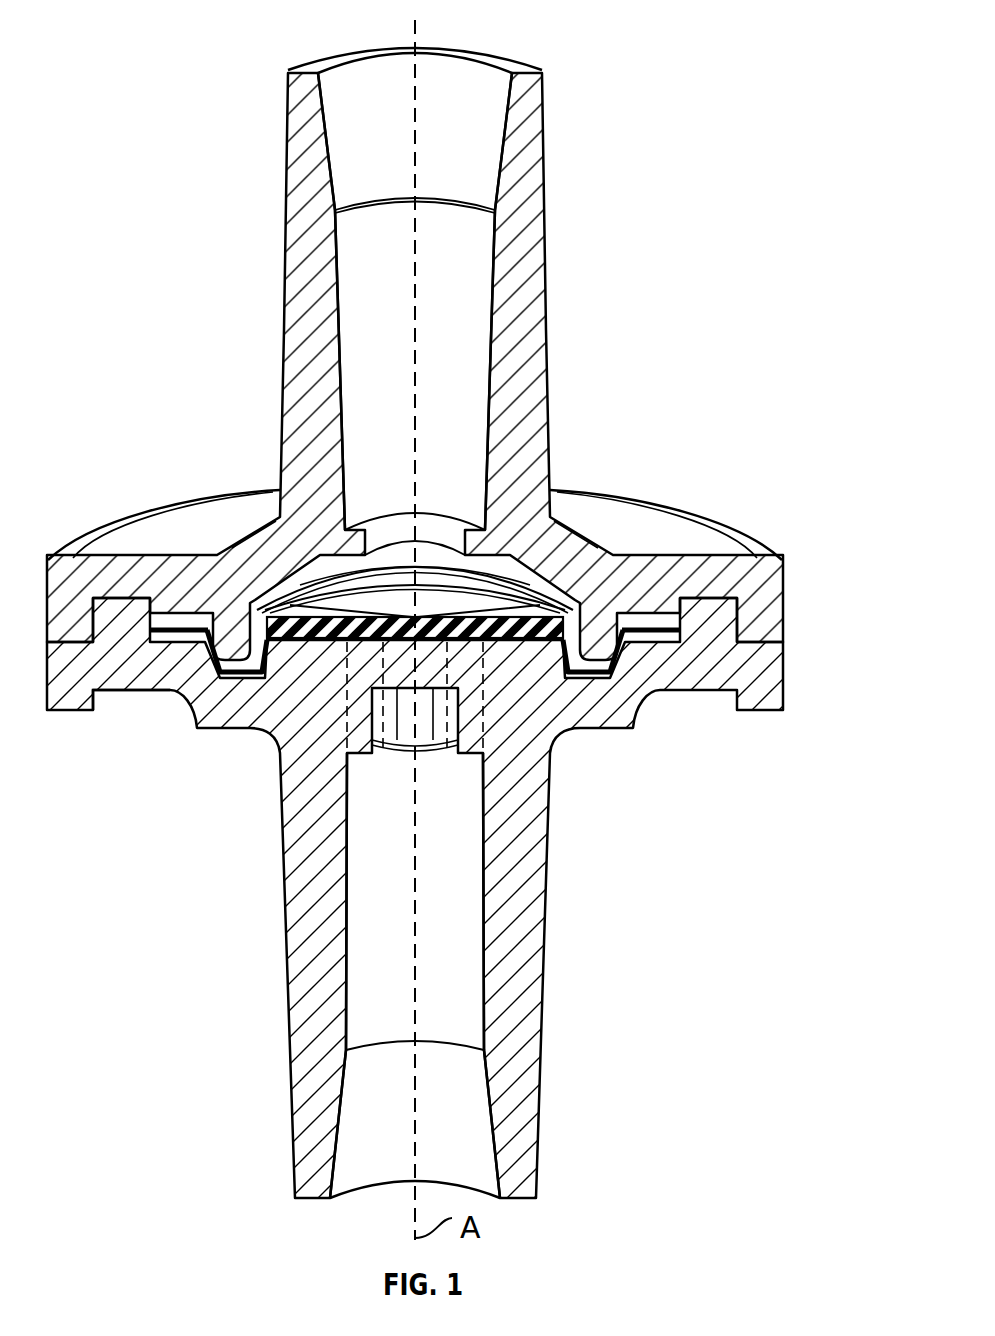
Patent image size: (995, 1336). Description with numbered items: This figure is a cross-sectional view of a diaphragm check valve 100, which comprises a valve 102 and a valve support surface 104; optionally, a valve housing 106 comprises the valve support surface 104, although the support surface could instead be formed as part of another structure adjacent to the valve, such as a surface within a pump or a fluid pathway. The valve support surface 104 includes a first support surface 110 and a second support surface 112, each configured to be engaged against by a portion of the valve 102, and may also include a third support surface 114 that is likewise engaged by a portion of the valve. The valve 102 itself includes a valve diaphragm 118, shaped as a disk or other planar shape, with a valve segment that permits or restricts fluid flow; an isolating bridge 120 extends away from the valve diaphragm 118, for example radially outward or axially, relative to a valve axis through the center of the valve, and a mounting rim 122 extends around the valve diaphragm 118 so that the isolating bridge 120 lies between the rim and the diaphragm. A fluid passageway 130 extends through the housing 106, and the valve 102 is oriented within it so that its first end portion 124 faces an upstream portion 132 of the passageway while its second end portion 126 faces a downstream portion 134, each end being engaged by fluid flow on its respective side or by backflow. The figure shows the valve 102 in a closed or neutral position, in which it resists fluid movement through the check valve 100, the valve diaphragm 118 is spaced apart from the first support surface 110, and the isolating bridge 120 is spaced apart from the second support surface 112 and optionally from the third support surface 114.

The diaphragm check valve 100 is at (125, 55).
The valve 102 is at (487, 600).
The valve support surface 104 is at (277, 691).
The valve housing 106 is at (794, 598).
The first support surface 110 is at (536, 651).
The second support surface 112 is at (594, 684).
The third support surface 114 is at (197, 728).
The valve diaphragm 118 is at (318, 604).
The isolating bridge 120 is at (236, 637).
The mounting rim 122 is at (178, 627).
The first end portion 124 is at (428, 647).
The second end portion 126 is at (401, 603).
The fluid passageway 130 is at (355, 296).
The upstream portion 132 is at (435, 958).
The downstream portion 134 is at (452, 300).